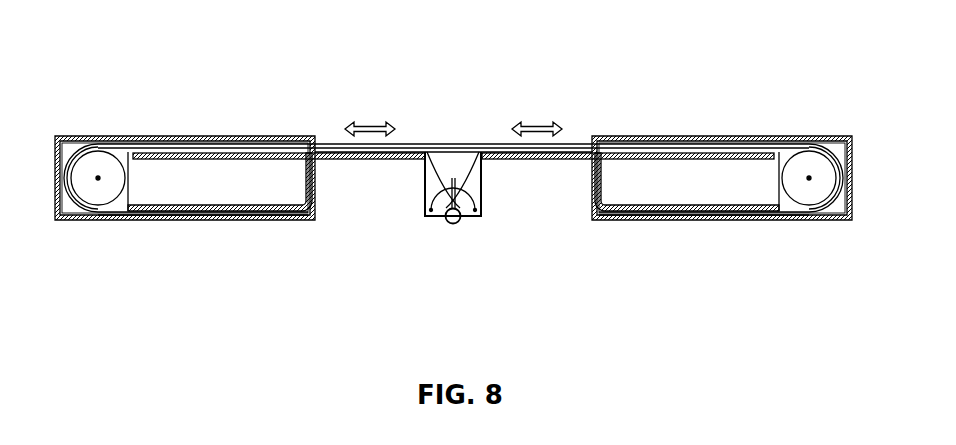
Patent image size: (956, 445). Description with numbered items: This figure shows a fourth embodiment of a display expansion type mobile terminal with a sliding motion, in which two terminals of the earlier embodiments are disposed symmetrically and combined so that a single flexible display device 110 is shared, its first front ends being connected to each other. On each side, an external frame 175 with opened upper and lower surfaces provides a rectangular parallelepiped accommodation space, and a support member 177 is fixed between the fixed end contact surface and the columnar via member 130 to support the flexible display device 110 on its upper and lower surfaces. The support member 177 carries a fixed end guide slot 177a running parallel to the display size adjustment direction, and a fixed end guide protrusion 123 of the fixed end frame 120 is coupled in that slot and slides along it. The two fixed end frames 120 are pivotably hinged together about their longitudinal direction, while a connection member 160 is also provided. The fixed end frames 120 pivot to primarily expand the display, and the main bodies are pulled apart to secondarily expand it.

The flexible display device 110 is at (462, 124).
The fixed end frame 120 is at (477, 167).
The fixed end guide protrusion 123 is at (453, 96).
The via member 130 is at (453, 220).
The connection member 160 is at (453, 236).
The external frame 175 is at (453, 121).
The support member 177 is at (453, 226).
The fixed end guide slot 177a is at (456, 101).